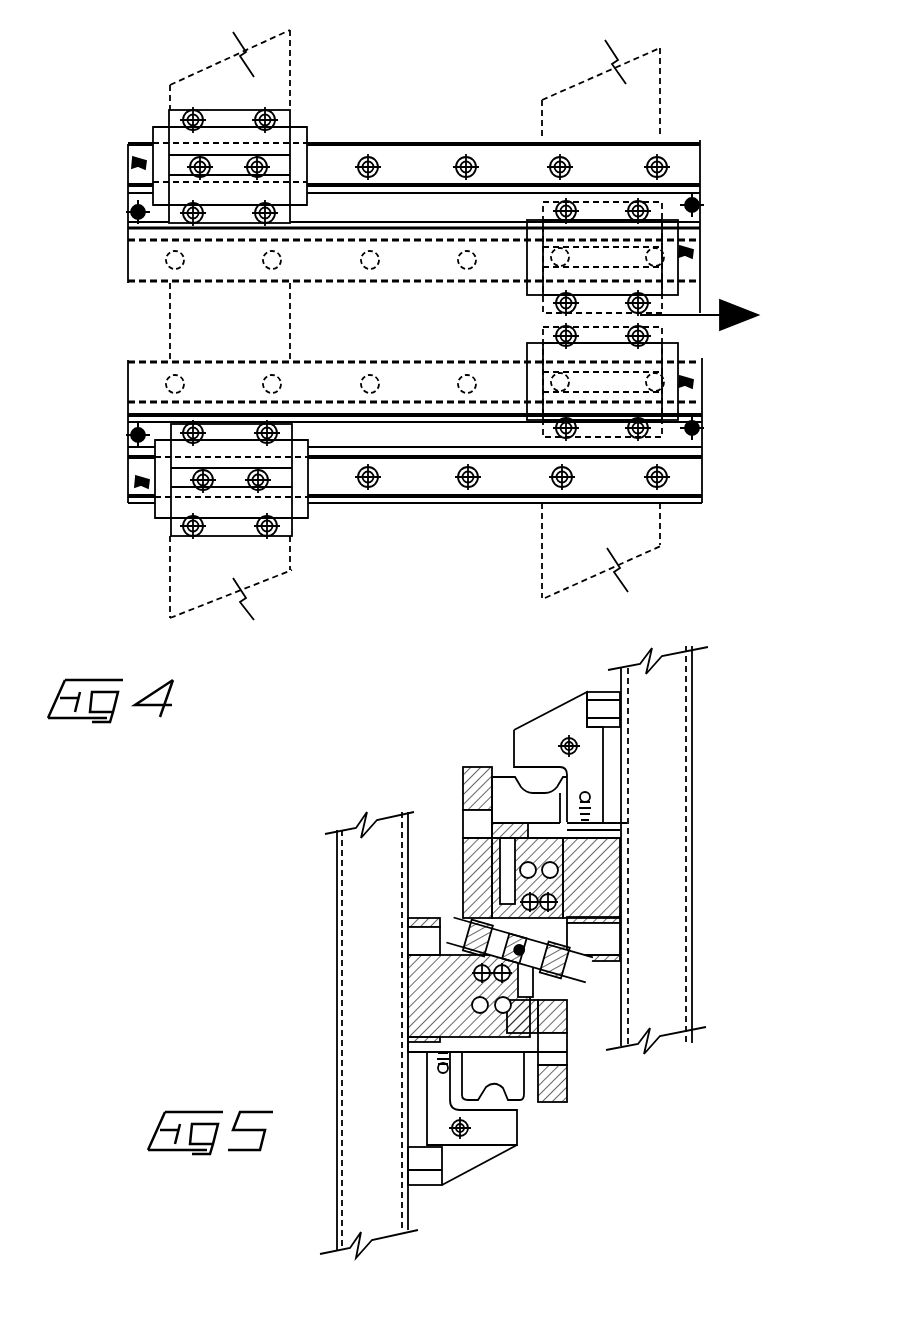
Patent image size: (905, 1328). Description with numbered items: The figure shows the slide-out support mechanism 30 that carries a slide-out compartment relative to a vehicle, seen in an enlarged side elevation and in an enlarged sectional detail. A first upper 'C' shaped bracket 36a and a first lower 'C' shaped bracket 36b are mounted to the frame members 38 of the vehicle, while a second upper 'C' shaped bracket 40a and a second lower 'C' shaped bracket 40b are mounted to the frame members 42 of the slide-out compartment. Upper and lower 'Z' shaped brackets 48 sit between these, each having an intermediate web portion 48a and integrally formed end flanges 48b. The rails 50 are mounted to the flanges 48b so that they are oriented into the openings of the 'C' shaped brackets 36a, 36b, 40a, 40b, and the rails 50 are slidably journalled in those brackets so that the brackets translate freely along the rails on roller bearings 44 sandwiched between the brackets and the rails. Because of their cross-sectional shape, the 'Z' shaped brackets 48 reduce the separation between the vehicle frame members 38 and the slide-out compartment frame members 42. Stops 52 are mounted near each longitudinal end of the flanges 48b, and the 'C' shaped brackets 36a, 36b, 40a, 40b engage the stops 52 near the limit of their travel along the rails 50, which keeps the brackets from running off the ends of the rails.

In FIG. 4, the slide-out support mechanism 30 is at (419, 324).
In FIG. 5, the slide-out support mechanism 30 is at (528, 944).
In FIG. 4, the first upper 'C' shaped bracket 36a is at (222, 128).
In FIG. 5, the first upper 'C' shaped bracket 36a is at (562, 718).
In FIG. 4, the first lower 'C' shaped bracket 36b is at (233, 528).
In FIG. 4, the frame member of vehicle 38 is at (212, 86).
In FIG. 5, the frame member of vehicle 38 is at (655, 714).
In FIG. 4, the second upper 'C' shaped bracket 40a is at (670, 288).
In FIG. 5, the second upper 'C' shaped bracket 40a is at (475, 1150).
In FIG. 4, the second lower 'C' shaped bracket 40b is at (660, 333).
In FIG. 4, the frame member of slide-out compartment 42 is at (643, 88).
In FIG. 5, the frame member of slide-out compartment 42 is at (367, 890).
In FIG. 5, the roller bearings 44 is at (473, 1004).
In FIG. 4, the 'Z' shaped bracket 48 is at (165, 235).
In FIG. 5, the 'Z' shaped bracket 48 is at (567, 1093).
In FIG. 5, the intermediate web portion 48a is at (576, 972).
In FIG. 5, the end flange 48b is at (480, 768).
In FIG. 4, the rail 50 is at (677, 158).
In FIG. 5, the rail 50 is at (502, 778).
In FIG. 4, the stop 52 is at (132, 210).